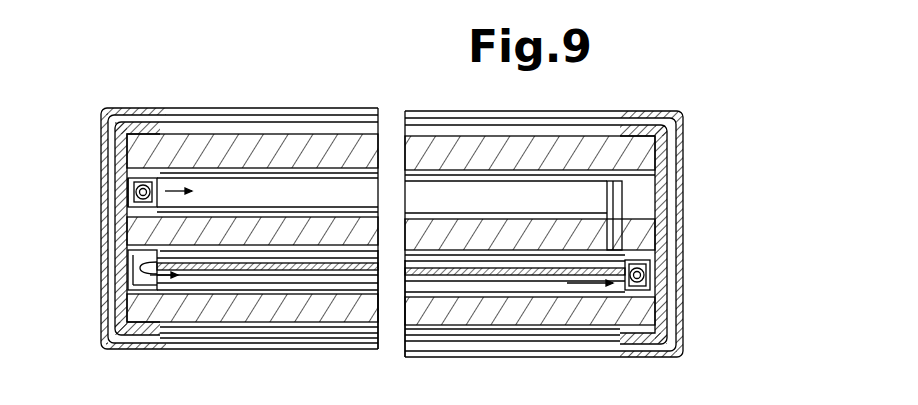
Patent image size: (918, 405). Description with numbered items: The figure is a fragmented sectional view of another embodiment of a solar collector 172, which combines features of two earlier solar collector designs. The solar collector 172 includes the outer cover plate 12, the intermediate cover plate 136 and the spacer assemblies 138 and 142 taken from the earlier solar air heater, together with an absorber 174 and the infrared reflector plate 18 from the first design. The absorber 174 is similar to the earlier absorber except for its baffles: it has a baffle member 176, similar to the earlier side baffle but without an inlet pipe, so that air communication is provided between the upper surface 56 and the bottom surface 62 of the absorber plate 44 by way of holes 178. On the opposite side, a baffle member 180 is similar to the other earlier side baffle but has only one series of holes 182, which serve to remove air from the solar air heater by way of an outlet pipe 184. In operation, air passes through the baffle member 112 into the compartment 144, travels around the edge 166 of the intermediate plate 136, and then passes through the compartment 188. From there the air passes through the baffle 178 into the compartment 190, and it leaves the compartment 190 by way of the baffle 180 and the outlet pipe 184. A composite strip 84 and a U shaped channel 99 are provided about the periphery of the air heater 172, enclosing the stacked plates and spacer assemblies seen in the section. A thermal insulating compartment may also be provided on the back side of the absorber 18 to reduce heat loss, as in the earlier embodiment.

The outer cover plate 12 is at (316, 148).
The infrared reflector plate 18 is at (482, 330).
The absorber plate 44 is at (547, 284).
The upper surface 56 is at (247, 265).
The bottom surface 62 is at (293, 277).
The composite strip 84 is at (680, 152).
The U shaped channel 99 is at (694, 113).
The baffle member 112 is at (130, 178).
The intermediate cover plate 136 is at (103, 228).
The spacer assembly 138 is at (130, 190).
The spacer assembly 142 is at (656, 206).
The compartment 144 is at (360, 198).
The edge 166 is at (607, 206).
The solar collector 172 is at (702, 242).
The absorber 174 is at (395, 292).
The baffle member 176 is at (130, 276).
The holes 178 is at (130, 261).
The baffle member 180 is at (655, 284).
The holes 182 is at (633, 340).
The outlet pipe 184 is at (645, 264).
The compartment 188 is at (403, 263).
The compartment 190 is at (380, 283).